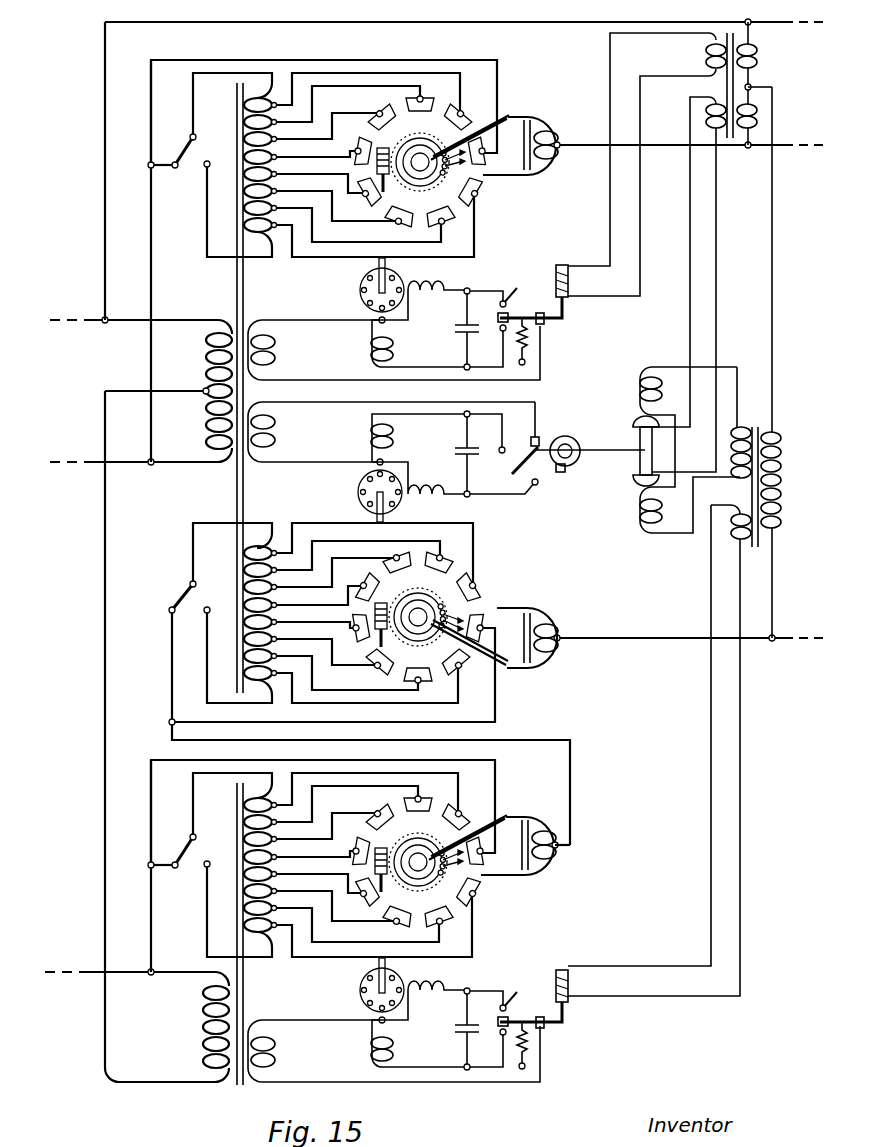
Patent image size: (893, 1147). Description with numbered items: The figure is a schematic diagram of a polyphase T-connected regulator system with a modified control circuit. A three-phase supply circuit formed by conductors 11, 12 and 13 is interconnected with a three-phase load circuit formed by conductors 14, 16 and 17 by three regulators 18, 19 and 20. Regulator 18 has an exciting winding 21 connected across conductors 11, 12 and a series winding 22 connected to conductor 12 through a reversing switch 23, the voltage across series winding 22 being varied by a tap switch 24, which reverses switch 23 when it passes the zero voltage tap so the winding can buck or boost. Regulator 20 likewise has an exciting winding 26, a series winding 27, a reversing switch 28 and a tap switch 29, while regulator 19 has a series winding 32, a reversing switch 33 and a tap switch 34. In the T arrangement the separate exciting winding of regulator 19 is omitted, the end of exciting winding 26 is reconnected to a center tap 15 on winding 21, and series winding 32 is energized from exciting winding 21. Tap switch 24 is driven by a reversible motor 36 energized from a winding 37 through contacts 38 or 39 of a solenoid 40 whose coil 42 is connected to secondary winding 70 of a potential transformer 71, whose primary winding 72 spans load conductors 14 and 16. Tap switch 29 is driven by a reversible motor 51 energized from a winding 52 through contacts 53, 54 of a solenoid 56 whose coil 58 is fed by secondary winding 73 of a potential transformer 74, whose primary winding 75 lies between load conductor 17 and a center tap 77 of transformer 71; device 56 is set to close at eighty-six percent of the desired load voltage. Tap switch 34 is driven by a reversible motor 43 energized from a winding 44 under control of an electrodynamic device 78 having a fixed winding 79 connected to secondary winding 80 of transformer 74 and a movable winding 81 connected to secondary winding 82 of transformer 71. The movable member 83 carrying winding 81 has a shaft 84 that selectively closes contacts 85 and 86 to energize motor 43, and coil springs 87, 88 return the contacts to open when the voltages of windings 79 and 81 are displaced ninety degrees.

The supply conductor 11 is at (104, 318).
The supply conductor 12 is at (100, 460).
The supply conductor 13 is at (100, 970).
The load conductor 14 is at (568, 24).
The center tap 15 is at (205, 393).
The load conductor 16 is at (789, 148).
The load conductor 17 is at (776, 640).
The regulator 18 is at (510, 204).
The regulator 19 is at (515, 602).
The regulator 20 is at (515, 906).
The exciting winding 21 is at (208, 346).
The series winding 22 is at (246, 112).
The reversing switch 23 is at (192, 138).
The tap switch 24 is at (431, 162).
The exciting winding 26 is at (203, 1022).
The series winding 27 is at (246, 823).
The reversing switch 28 is at (192, 839).
The tap switch 29 is at (429, 862).
The series winding 32 is at (246, 562).
The reversing switch 33 is at (192, 586).
The tap switch 34 is at (429, 616).
The reversible motor 36 is at (356, 300).
The winding 37 is at (276, 344).
The contacts 38 is at (471, 336).
The contacts 39 is at (510, 300).
The solenoid 40 is at (595, 330).
The coil 42 is at (571, 281).
The reversible motor 43 is at (350, 503).
The winding 44 is at (276, 426).
The reversible motor 51 is at (356, 1000).
The winding 52 is at (276, 1046).
The contacts 53 is at (471, 1036).
The contacts 54 is at (510, 1005).
The solenoid 56 is at (595, 1035).
The coil 58 is at (571, 986).
The secondary winding 70 is at (706, 52).
The potential transformer 71 is at (782, 82).
The primary winding 72 is at (759, 52).
The secondary winding 73 is at (659, 750).
The potential transformer 74 is at (765, 572).
The primary winding 75 is at (783, 491).
The center tap 77 is at (762, 90).
The electrodynamic device 78 is at (630, 516).
The fixed winding 79 is at (661, 387).
The secondary winding 80 is at (749, 422).
The movable winding 81 is at (639, 470).
The secondary winding 82 is at (704, 118).
The movable member 83 is at (636, 420).
The shaft 84 is at (590, 437).
The contact 85 is at (533, 486).
The contact 86 is at (509, 464).
The coil spring 87 is at (547, 421).
The coil spring 88 is at (571, 480).